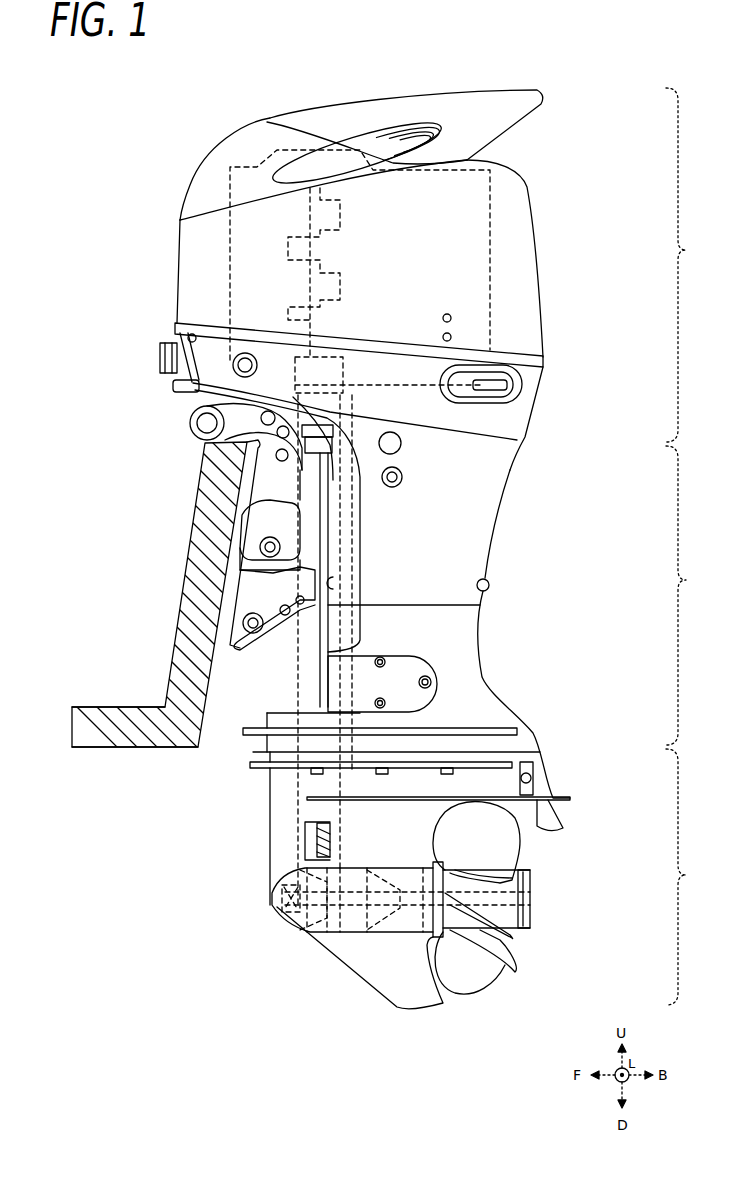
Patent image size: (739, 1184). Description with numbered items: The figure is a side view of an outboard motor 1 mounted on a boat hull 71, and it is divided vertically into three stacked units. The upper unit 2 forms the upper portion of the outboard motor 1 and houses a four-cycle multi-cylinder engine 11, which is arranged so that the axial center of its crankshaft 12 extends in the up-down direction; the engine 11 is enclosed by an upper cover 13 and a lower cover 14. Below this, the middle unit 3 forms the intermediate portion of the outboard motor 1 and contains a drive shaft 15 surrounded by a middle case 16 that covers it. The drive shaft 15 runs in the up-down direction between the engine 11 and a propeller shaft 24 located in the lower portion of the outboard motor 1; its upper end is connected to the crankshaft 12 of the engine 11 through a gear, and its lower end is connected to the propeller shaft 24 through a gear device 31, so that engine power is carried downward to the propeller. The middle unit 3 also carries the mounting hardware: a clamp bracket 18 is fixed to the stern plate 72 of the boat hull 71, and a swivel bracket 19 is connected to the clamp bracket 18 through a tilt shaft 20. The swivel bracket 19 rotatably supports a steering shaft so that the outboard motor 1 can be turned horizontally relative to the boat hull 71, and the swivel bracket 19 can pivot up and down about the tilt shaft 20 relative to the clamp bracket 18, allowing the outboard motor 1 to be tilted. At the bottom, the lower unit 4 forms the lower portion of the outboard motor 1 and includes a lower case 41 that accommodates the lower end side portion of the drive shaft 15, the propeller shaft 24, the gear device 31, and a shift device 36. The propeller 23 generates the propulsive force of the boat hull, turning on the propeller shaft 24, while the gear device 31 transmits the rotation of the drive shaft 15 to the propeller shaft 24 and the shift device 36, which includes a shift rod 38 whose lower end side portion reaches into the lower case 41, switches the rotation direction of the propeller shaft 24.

The outboard motor 1 is at (553, 74).
The upper unit 2 is at (684, 265).
The middle unit 3 is at (684, 595).
The lower unit 4 is at (684, 877).
The engine 11 is at (462, 265).
The crankshaft 12 is at (290, 243).
The upper cover 13 is at (522, 407).
The lower cover 14 is at (508, 192).
The drive shaft 15 is at (362, 557).
The middle case 16 is at (490, 497).
The clamp bracket 18 is at (255, 458).
The swivel bracket 19 is at (313, 510).
The tilt shaft 20 is at (207, 423).
The propeller 23 is at (503, 850).
The propeller shaft 24 is at (397, 933).
The gear device 31 is at (343, 932).
The shift device 36 is at (273, 907).
The shift rod 38 is at (293, 803).
The lower case 41 is at (285, 850).
The boat hull 71 is at (97, 752).
The stern plate 72 is at (203, 567).